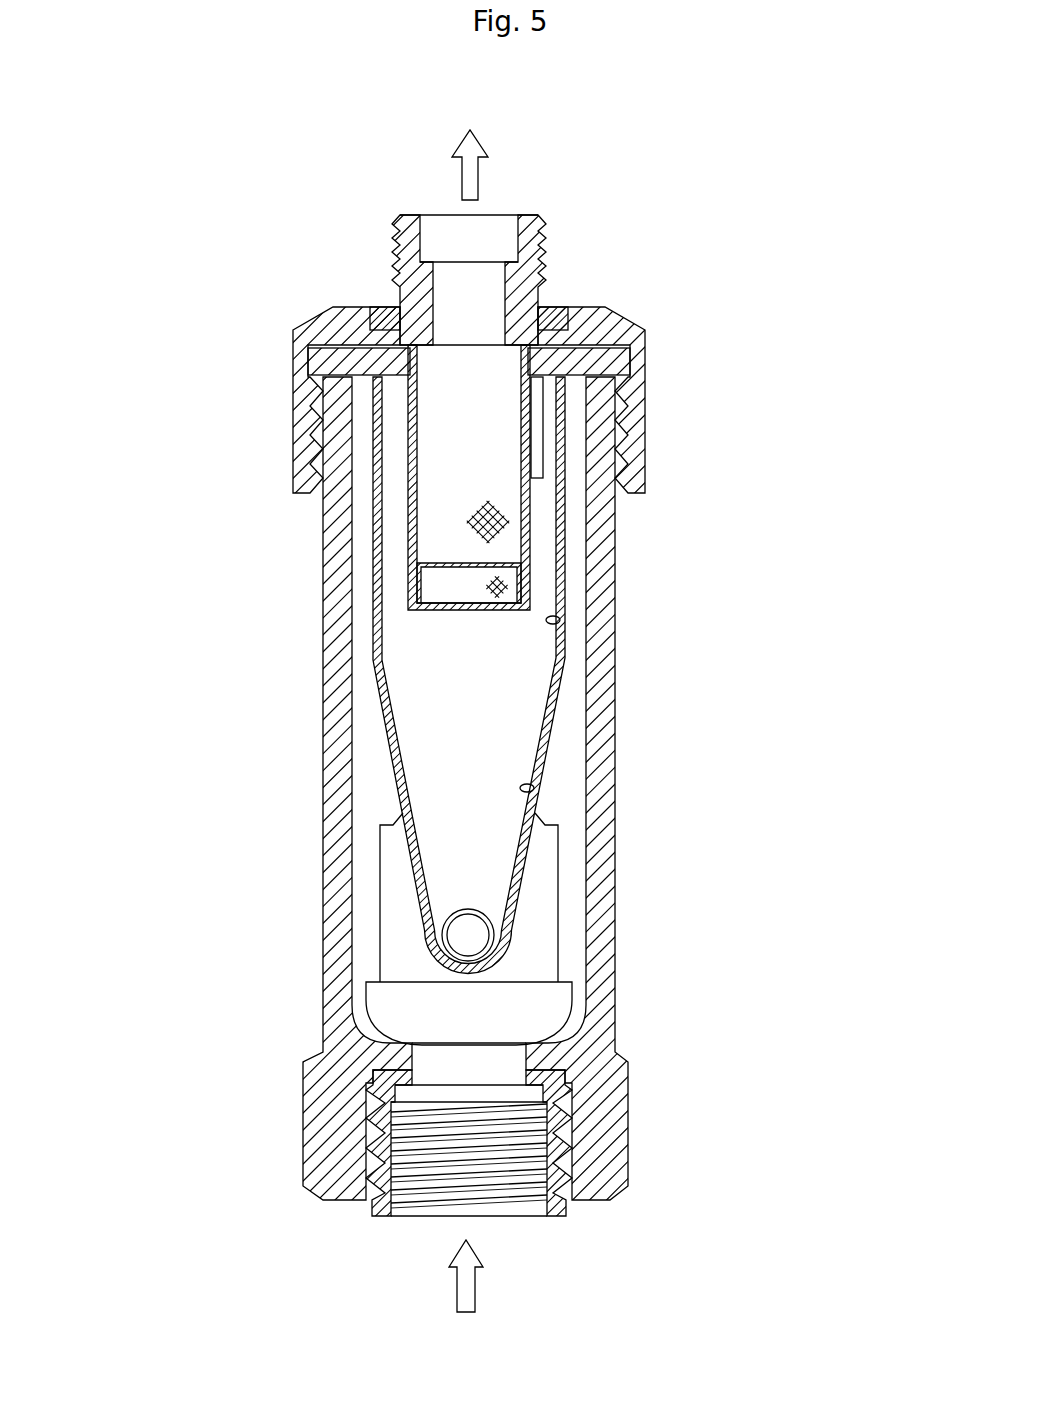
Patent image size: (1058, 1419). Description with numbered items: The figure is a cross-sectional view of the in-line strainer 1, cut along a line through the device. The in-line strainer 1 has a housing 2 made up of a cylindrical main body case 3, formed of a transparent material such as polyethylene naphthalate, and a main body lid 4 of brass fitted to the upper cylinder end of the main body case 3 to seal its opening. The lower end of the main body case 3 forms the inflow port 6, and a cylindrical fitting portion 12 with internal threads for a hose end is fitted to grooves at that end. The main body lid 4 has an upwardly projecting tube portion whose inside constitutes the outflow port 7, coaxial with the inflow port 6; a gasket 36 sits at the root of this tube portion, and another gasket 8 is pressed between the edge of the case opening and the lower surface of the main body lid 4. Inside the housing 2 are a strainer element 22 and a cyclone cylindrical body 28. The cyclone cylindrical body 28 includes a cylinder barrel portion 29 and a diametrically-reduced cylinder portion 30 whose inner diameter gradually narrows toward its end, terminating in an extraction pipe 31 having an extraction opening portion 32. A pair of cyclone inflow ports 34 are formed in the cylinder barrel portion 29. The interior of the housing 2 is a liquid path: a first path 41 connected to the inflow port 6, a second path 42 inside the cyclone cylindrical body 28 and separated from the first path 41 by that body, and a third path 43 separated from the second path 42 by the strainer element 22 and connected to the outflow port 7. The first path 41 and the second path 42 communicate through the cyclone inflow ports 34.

The in-line strainer 1 is at (667, 167).
The housing 2 is at (175, 305).
The main body case 3 is at (317, 568).
The main body lid 4 is at (296, 324).
The inflow port 6 is at (427, 1058).
The outflow port 7 is at (490, 295).
The gasket 8 is at (608, 362).
The fitting portion 12 is at (380, 1220).
The strainer element 22 is at (535, 557).
The cyclone cylindrical body 28 is at (386, 739).
The cylinder barrel portion 29 is at (560, 620).
The diametrically-reduced cylinder portion 30 is at (534, 788).
The extraction pipe 31 is at (515, 950).
The extraction opening portion 32 is at (467, 925).
The cyclone inflow ports 34 is at (537, 436).
The gasket 36 is at (551, 313).
The first path 41 is at (362, 923).
The second path 42 is at (395, 573).
The third path 43 is at (472, 465).